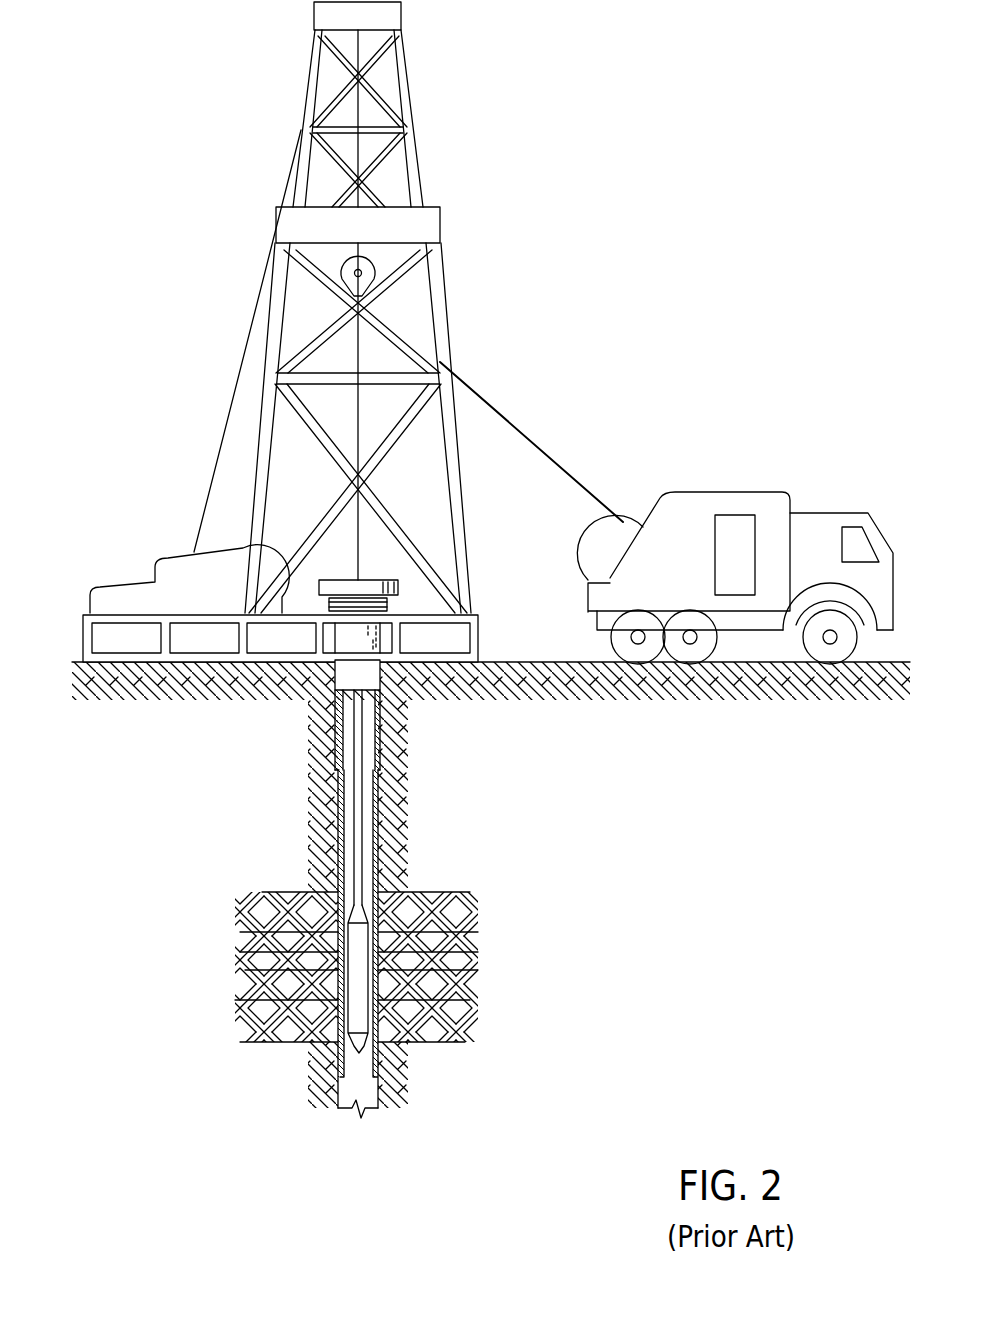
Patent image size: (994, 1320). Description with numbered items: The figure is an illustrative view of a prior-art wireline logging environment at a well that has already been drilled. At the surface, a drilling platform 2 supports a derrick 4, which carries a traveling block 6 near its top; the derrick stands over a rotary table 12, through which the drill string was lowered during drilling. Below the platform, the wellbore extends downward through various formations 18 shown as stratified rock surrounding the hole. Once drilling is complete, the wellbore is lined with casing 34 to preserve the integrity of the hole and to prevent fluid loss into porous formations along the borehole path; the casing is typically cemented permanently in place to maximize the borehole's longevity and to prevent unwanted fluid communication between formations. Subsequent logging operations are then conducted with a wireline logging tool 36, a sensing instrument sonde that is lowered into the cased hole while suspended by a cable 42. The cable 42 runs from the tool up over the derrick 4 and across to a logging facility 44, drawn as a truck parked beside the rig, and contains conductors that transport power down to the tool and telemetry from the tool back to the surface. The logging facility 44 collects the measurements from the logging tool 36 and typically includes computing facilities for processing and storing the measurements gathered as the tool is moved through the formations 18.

The drilling platform 2 is at (83, 632).
The derrick 4 is at (420, 163).
The traveling block 6 is at (368, 268).
The rotary table 12 is at (382, 578).
The formations 18 is at (497, 892).
The casing 34 is at (338, 821).
The wireline logging tool 36 is at (245, 970).
The cable 42 is at (480, 392).
The logging facility 44 is at (757, 490).